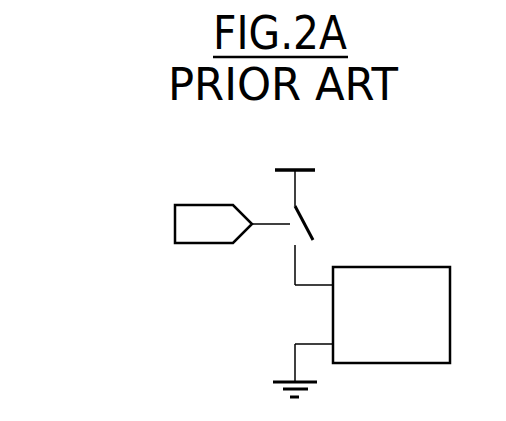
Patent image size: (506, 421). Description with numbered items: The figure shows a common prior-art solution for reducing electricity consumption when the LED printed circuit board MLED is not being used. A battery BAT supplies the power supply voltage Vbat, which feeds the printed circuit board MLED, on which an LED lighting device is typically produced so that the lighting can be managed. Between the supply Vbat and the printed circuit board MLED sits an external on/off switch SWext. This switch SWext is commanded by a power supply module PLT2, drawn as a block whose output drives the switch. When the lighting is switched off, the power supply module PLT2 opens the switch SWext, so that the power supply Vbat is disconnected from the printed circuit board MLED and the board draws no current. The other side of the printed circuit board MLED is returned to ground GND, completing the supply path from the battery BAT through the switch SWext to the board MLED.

The battery BAT is at (278, 170).
The power supply Vbat is at (295, 160).
The external on/off switch SWext is at (307, 222).
The power supply module PLT2 is at (175, 224).
The printed circuit board MLED is at (372, 315).
The ground GND is at (270, 370).